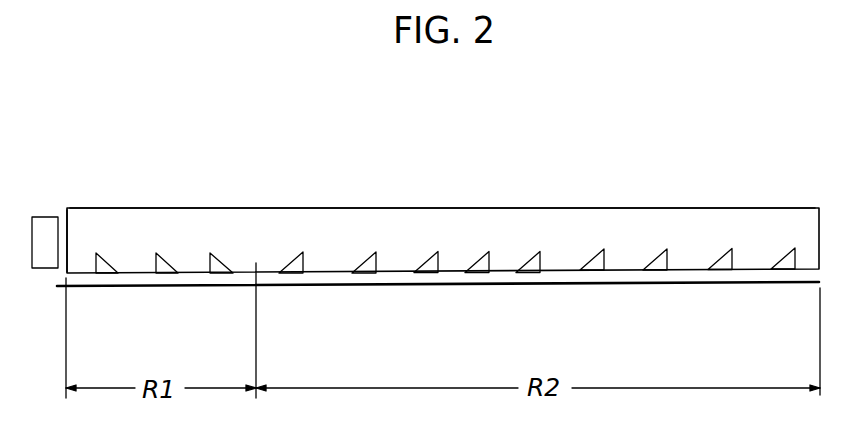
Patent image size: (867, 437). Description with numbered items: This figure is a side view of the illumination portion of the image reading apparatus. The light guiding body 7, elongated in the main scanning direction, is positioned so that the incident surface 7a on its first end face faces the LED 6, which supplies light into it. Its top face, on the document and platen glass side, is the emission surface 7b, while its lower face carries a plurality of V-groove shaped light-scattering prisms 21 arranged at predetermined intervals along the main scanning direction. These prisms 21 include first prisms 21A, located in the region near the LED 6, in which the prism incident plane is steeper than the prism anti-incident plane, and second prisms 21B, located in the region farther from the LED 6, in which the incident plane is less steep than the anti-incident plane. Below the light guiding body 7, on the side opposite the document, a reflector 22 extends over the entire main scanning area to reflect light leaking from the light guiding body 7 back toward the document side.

The LED 6 is at (44, 215).
The light guiding body 7 is at (748, 207).
The incident surface 7a is at (58, 248).
The emission surface 7b is at (598, 207).
The light-scattering prisms 21 is at (445, 195).
The first prism 21A is at (105, 258).
The second prism 21B is at (302, 256).
The reflector 22 is at (551, 288).